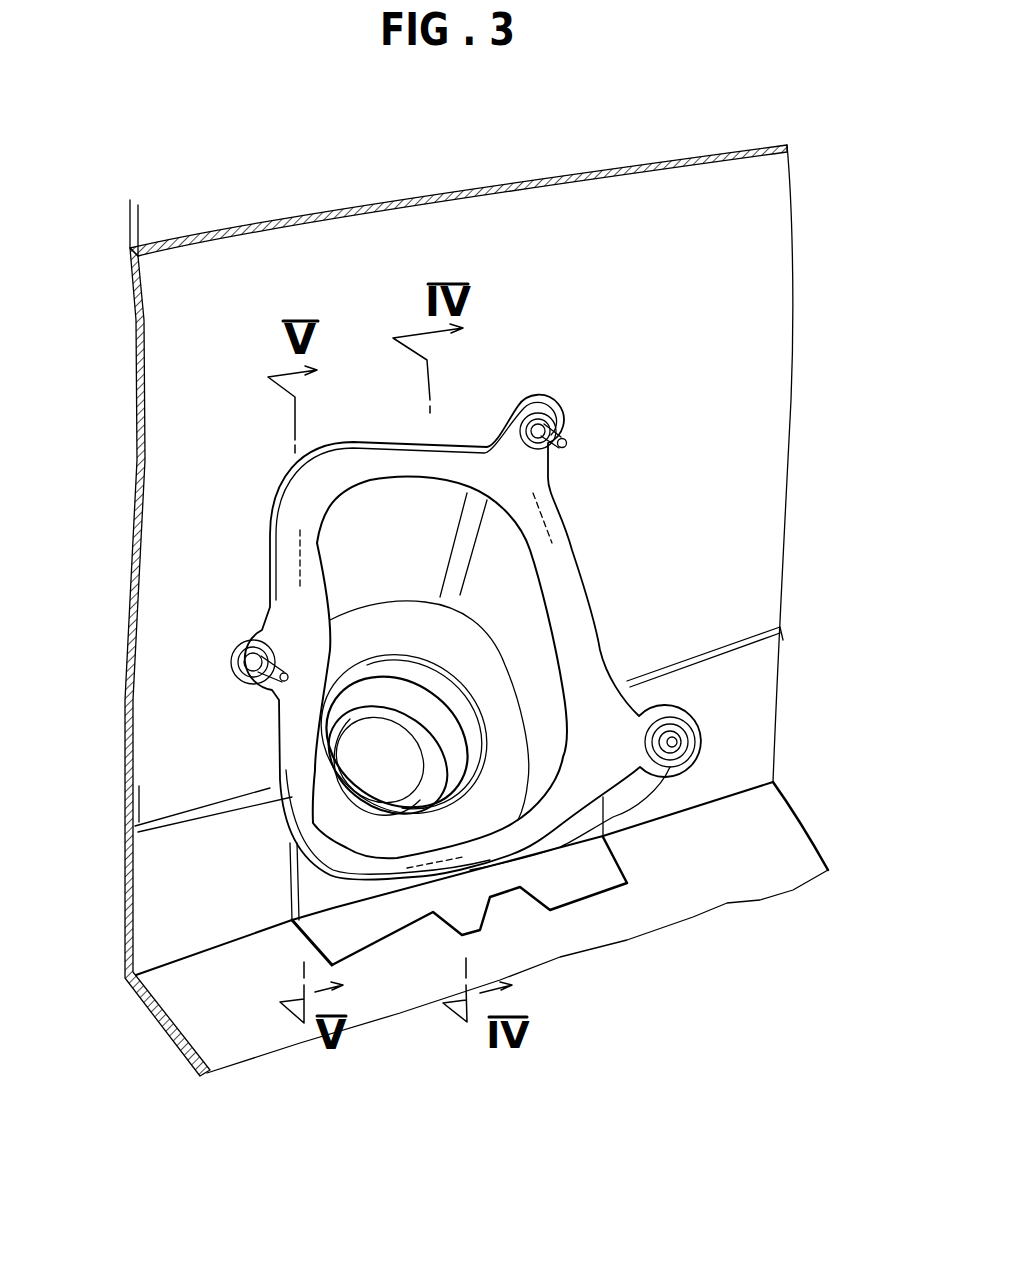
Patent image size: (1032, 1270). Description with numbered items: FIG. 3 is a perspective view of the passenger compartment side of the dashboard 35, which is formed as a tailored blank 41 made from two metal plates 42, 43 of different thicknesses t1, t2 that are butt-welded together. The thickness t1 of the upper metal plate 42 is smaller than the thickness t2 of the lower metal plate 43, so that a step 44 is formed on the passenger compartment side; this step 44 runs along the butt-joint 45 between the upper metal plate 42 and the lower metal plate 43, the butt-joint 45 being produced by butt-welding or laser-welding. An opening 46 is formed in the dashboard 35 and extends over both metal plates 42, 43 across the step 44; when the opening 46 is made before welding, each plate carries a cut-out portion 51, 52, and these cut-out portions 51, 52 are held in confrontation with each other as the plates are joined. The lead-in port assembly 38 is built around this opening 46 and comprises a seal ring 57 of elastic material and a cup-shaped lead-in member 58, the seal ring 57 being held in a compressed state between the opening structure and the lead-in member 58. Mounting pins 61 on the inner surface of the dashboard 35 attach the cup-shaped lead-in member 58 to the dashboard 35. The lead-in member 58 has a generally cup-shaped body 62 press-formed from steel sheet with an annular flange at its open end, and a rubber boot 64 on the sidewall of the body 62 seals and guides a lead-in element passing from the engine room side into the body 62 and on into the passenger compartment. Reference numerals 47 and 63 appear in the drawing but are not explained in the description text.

The dashboard 35 is at (806, 212).
The lead-in port assembly 38 is at (346, 397).
The tailored blank 41 is at (800, 304).
The upper metal plate 42 is at (556, 297).
The lower metal plate 43 is at (216, 905).
The step 44 is at (215, 808).
The butt-joint 45 is at (190, 850).
The opening 46 is at (297, 557).
The wall junction 47 is at (130, 833).
The cut-out portion 51 is at (551, 519).
The cut-out portion 52 is at (592, 735).
The seal ring 57 is at (423, 880).
The cup-shaped lead-in member 58 is at (563, 862).
The mounting pins 61 is at (566, 445).
The cup-shaped body 62 is at (515, 616).
The rib 63 is at (589, 620).
The rubber boot 64 is at (443, 734).
The thickness of the upper metal plate t1 is at (150, 220).
The thickness of the lower metal plate t2 is at (151, 803).